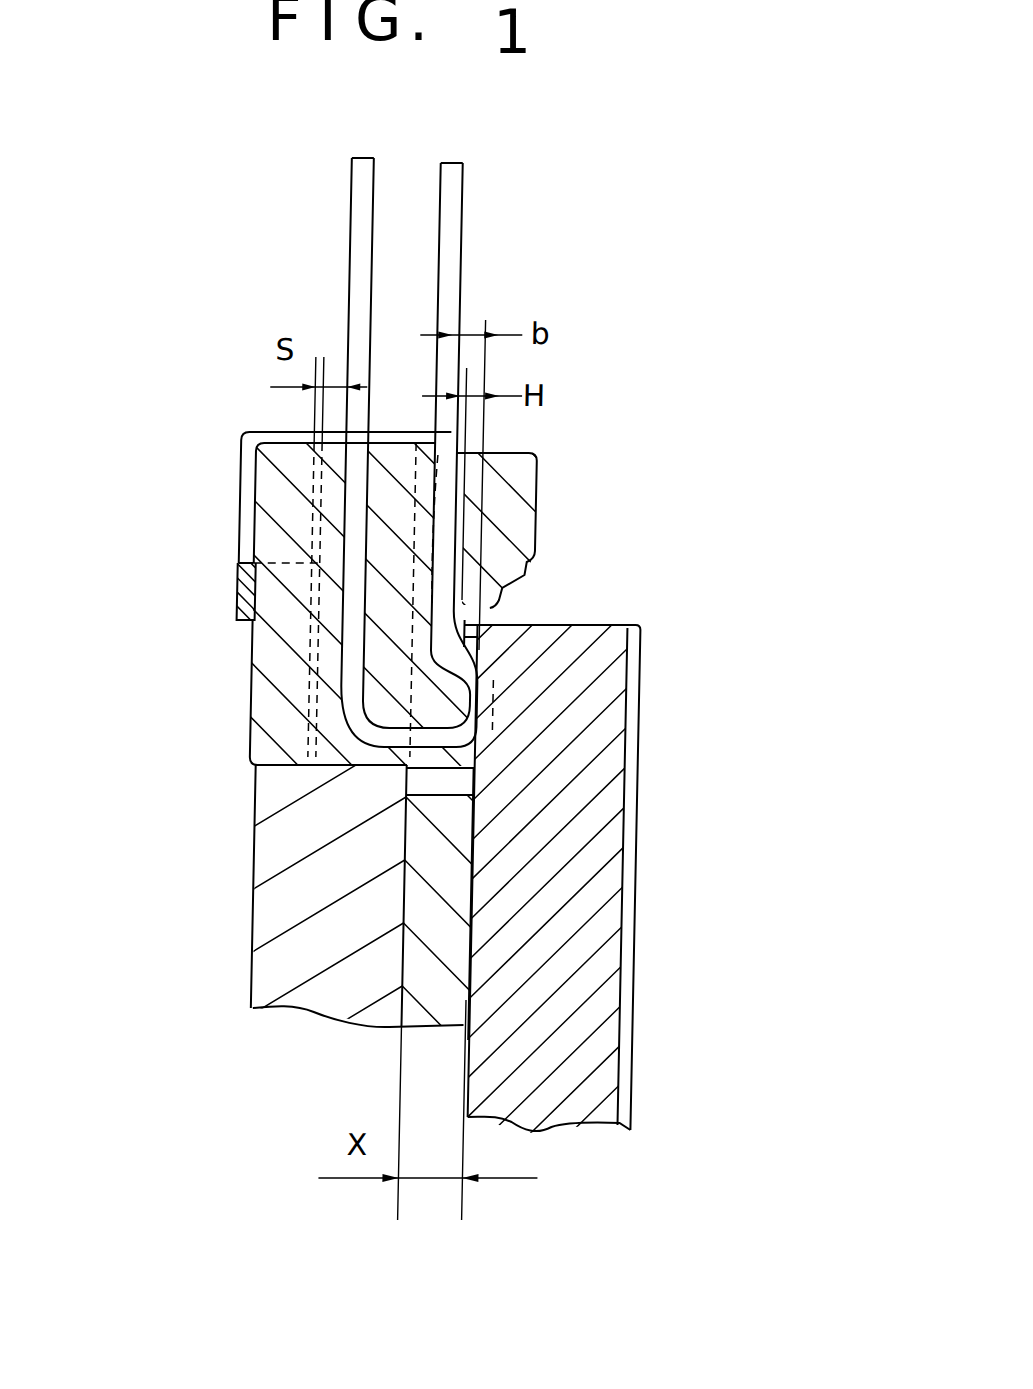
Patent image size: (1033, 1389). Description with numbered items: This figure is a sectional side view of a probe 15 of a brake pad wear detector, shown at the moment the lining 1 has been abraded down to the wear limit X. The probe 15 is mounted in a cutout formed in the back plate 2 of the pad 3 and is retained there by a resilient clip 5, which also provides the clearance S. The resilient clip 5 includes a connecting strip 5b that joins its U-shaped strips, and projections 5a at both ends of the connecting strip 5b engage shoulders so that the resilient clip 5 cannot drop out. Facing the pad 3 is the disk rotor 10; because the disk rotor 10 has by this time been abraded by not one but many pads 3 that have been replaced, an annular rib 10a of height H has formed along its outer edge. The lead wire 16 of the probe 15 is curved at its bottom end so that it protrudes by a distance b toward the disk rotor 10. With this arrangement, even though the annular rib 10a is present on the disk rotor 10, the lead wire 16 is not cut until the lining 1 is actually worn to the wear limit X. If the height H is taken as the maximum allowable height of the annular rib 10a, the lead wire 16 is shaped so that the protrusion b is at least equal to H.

The lining 1 is at (434, 990).
The back plate 2 is at (297, 891).
The pad 3 is at (375, 1038).
The resilient clip 5 is at (232, 432).
The projection 5a is at (249, 635).
The connecting strip 5b is at (234, 583).
The disk rotor 10 is at (566, 990).
The annular rib 10a is at (467, 625).
The probe 15 is at (513, 503).
The lead wire 16 is at (441, 239).